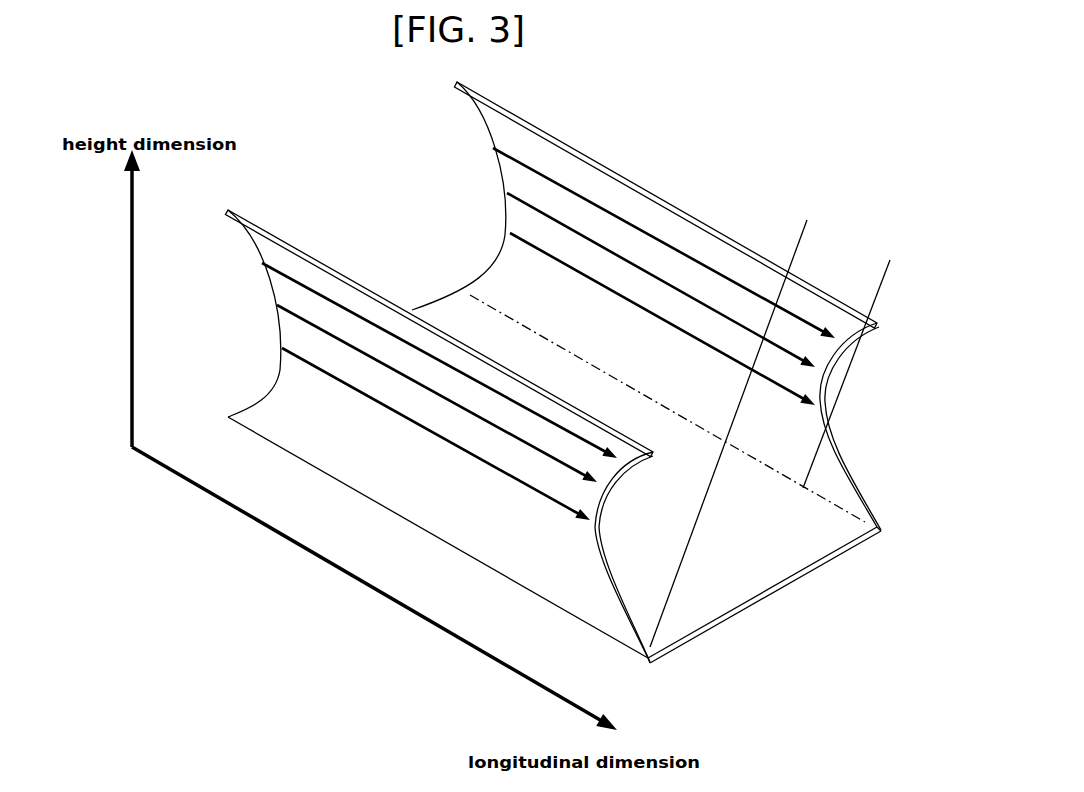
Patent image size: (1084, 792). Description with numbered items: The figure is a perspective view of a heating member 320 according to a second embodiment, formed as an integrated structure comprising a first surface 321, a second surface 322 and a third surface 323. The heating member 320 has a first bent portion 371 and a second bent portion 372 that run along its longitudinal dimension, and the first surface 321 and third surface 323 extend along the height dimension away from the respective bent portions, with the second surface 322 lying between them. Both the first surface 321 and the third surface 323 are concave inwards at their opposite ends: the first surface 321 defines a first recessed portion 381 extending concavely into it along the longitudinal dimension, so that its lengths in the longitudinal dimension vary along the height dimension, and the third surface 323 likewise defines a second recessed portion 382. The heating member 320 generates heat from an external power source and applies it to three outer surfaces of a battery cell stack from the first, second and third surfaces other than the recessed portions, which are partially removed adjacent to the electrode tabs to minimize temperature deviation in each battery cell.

The heating member 320 is at (223, 93).
The first surface of the heating member 321 is at (417, 443).
The second surface of the heating member 322 is at (717, 563).
The third surface of the heating member 323 is at (673, 197).
The first bent portion 371 is at (756, 415).
The second bent portion 372 is at (874, 357).
The first recessed portion 381 is at (595, 558).
The second recessed portion 382 is at (840, 455).